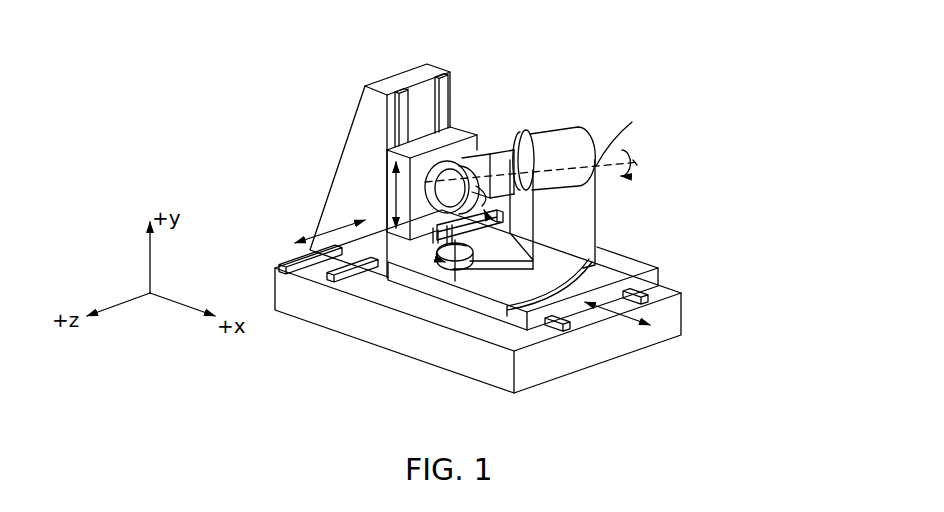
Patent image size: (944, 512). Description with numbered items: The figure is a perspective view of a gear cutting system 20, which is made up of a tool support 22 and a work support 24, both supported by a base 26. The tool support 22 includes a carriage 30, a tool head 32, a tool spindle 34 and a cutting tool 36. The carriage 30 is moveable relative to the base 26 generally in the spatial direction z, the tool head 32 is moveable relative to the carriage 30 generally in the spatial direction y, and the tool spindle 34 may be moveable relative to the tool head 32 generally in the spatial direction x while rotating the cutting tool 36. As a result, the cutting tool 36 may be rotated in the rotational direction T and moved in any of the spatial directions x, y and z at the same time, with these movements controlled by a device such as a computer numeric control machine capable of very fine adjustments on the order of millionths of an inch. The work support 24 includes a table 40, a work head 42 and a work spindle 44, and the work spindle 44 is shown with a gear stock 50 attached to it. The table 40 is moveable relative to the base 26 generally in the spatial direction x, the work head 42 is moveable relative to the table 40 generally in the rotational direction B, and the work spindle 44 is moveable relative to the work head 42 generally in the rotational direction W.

The gear cutting system 20 is at (721, 56).
The tool support 22 is at (338, 162).
The work support 24 is at (591, 127).
The base 26 is at (671, 320).
The carriage 30 is at (362, 118).
The tool head 32 is at (463, 128).
The tool spindle 34 is at (433, 203).
The cutting tool 36 is at (457, 160).
The table 40 is at (640, 268).
The work head 42 is at (576, 133).
The work spindle 44 is at (521, 135).
The gear stock 50 is at (487, 157).